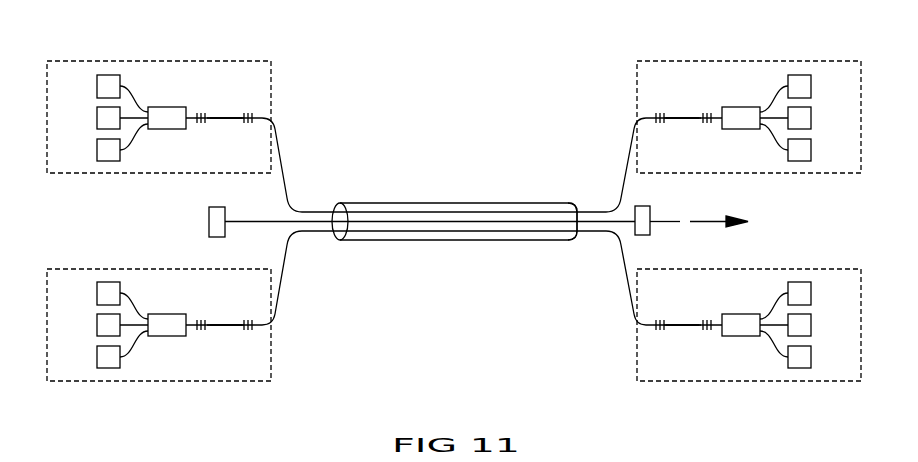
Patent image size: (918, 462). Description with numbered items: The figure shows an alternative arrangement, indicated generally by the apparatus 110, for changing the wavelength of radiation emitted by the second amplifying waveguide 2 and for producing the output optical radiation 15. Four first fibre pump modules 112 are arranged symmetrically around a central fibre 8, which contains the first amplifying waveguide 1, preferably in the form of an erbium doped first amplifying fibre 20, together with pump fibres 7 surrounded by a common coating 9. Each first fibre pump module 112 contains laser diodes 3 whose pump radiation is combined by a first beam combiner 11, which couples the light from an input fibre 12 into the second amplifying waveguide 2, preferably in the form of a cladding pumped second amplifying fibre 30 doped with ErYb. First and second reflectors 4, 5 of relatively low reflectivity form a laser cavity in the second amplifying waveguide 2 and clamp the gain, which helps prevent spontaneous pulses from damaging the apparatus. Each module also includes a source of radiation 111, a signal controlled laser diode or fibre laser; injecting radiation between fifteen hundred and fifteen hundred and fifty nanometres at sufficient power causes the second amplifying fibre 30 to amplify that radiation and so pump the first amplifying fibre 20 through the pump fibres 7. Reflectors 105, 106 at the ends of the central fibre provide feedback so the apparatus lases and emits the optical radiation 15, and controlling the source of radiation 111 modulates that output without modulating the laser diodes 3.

The first amplifying waveguide 1 is at (469, 222).
The second amplifying waveguide 2 is at (229, 118).
The laser diode 3 is at (97, 88).
The first reflector 4 is at (248, 113).
The second reflector 5 is at (197, 113).
The pump fibre 7 is at (282, 178).
The fibre 8 is at (371, 203).
The common coating 9 is at (536, 203).
The first beam combiner 11 is at (168, 107).
The input fibre 12 is at (141, 336).
The optical radiation 15 is at (698, 221).
The first amplifying fibre 20 is at (461, 224).
The second amplifying fibre 30 is at (222, 120).
The reflector 105 is at (209, 220).
The reflector 106 is at (643, 235).
The fiber laser system 110 is at (272, 408).
The source of radiation 111 is at (97, 120).
The first fibre pump module 112 is at (122, 61).